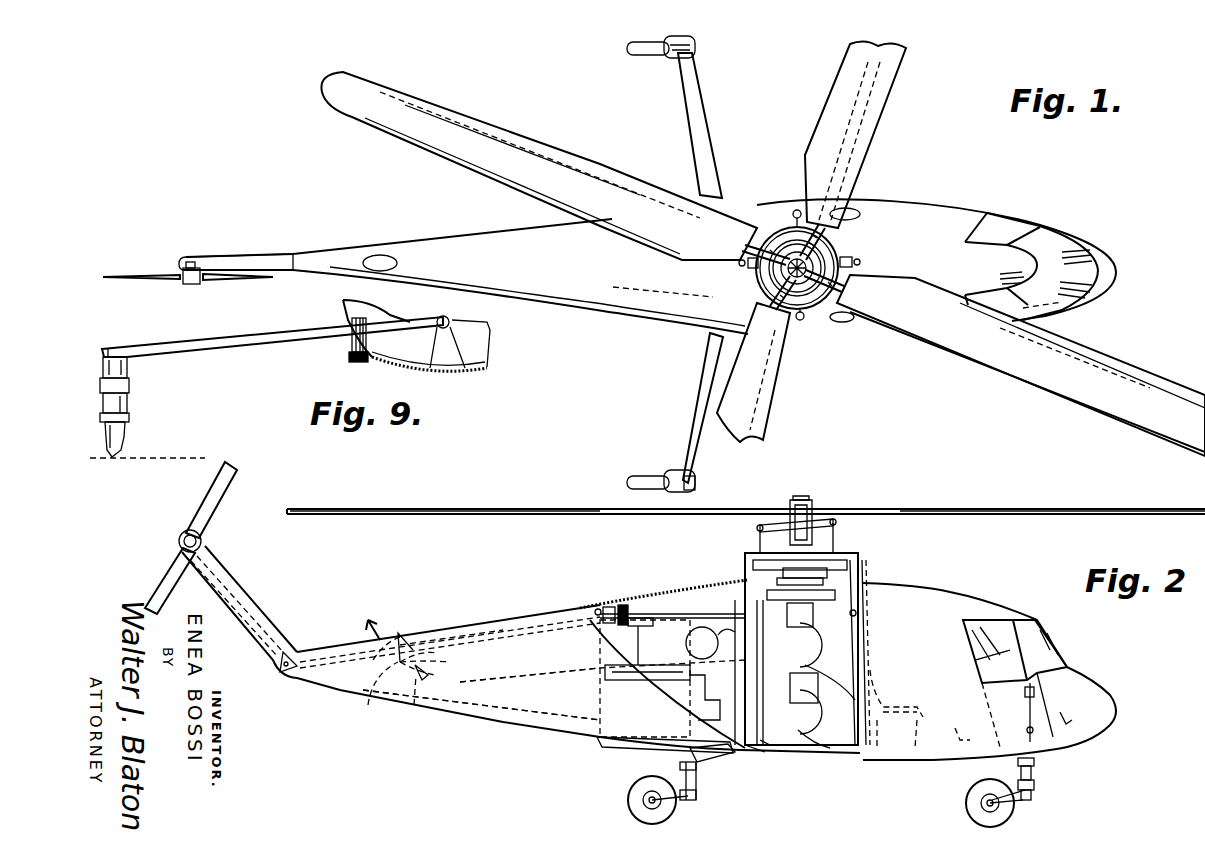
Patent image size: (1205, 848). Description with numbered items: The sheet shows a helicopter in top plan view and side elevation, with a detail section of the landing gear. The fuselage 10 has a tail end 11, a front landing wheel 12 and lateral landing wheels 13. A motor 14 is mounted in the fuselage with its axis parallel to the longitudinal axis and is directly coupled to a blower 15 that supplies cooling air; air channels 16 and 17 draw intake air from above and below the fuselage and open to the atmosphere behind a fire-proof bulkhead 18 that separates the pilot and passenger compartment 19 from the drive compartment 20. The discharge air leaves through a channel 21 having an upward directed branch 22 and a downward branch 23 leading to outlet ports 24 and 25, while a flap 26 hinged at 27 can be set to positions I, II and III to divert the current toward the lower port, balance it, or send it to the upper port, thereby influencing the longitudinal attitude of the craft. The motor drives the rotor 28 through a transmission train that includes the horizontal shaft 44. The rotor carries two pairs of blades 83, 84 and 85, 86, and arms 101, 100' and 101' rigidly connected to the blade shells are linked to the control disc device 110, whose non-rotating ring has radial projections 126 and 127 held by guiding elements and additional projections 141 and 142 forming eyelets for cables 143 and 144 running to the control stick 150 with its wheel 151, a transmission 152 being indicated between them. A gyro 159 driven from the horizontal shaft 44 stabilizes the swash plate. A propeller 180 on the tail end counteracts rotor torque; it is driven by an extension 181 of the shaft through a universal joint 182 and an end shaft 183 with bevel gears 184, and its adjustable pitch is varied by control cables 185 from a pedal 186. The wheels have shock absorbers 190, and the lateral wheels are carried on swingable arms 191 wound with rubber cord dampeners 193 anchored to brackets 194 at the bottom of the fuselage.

In FIG. 1, the fuselage 10 is at (583, 298).
In FIG. 9, the fuselage 10 is at (462, 366).
In FIG. 2, the fuselage 10 is at (940, 597).
In FIG. 1, the tail end 11 is at (277, 254).
In FIG. 2, the tail end 11 is at (252, 602).
In FIG. 2, the front landing wheel 12 is at (967, 796).
In FIG. 1, the lateral landing wheels 13 is at (637, 475).
In FIG. 9, the lateral landing wheels 13 is at (111, 458).
In FIG. 2, the lateral landing wheels 13 is at (637, 783).
In FIG. 2, the motor 14 is at (774, 649).
In FIG. 2, the blower 15 is at (758, 752).
In FIG. 1, the air channel 16 is at (850, 323).
In FIG. 2, the air channel 16 is at (858, 600).
In FIG. 2, the air channel 17 is at (804, 752).
In FIG. 2, the fire-proof bulkhead 18 is at (858, 613).
In FIG. 1, the pilot and passenger compartment 19 is at (1053, 258).
In FIG. 2, the pilot and passenger compartment 19 is at (1042, 630).
In FIG. 2, the drive compartment 20 is at (830, 692).
In FIG. 2, the channel 21 is at (550, 674).
In FIG. 2, the upward directed branch 22 is at (413, 650).
In FIG. 2, the downward branch 23 is at (414, 705).
In FIG. 1, the outlet port 24 is at (378, 255).
In FIG. 2, the outlet port 24 is at (398, 633).
In FIG. 2, the outlet port 25 is at (365, 710).
In FIG. 2, the flap 26 is at (427, 683).
In FIG. 2, the hinge 27 is at (380, 660).
In FIG. 1, the rotor 28 is at (926, 357).
In FIG. 2, the rotor 28 is at (850, 515).
In FIG. 2, the horizontal shaft 44 is at (663, 612).
In FIG. 1, the blade 83 is at (780, 390).
In FIG. 2, the blade 83 is at (826, 522).
In FIG. 1, the blade 84 is at (877, 100).
In FIG. 1, the blade 85 is at (1083, 355).
In FIG. 2, the blade 85 is at (958, 509).
In FIG. 1, the blade 86 is at (592, 160).
In FIG. 2, the blade 86 is at (434, 509).
In FIG. 1, the arm 100' is at (778, 268).
In FIG. 1, the arm 101 is at (810, 267).
In FIG. 1, the arm 101' is at (824, 260).
In FIG. 2, the control disc device 110 is at (770, 548).
In FIG. 1, the radial projection 126 is at (860, 262).
In FIG. 2, the radial projection 126 is at (858, 557).
In FIG. 1, the radial projection 127 is at (745, 263).
In FIG. 1, the projection 141 is at (797, 210).
In FIG. 1, the projection / control-actuating means 142 is at (805, 320).
In FIG. 2, the projection / control-actuating means 142 is at (1042, 745).
In FIG. 2, the cable 143 is at (725, 648).
In FIG. 2, the cable 144 is at (868, 674).
In FIG. 2, the control stick 150 is at (1037, 705).
In FIG. 2, the wheel 151 is at (1036, 688).
In FIG. 2, the transmission 152 is at (955, 728).
In FIG. 2, the gyro 159 is at (655, 675).
In FIG. 1, the propeller 180 is at (146, 279).
In FIG. 2, the propeller 180 is at (235, 479).
In FIG. 2, the extension 181 is at (474, 637).
In FIG. 2, the universal joint 182 is at (608, 605).
In FIG. 2, the end shaft 183 is at (282, 631).
In FIG. 2, the bevel gears 184 is at (286, 676).
In FIG. 2, the control cables 185 is at (488, 703).
In FIG. 2, the pedal 186 is at (1073, 718).
In FIG. 1, the shock absorbers 190 is at (696, 485).
In FIG. 9, the shock absorbers 190 is at (131, 396).
In FIG. 2, the shock absorbers 190 is at (697, 788).
In FIG. 1, the arms 191 is at (697, 352).
In FIG. 9, the arms 191 is at (229, 341).
In FIG. 2, the arms 191 is at (700, 760).
In FIG. 9, the rubber cord dampeners 193 is at (345, 345).
In FIG. 9, the brackets 194 is at (366, 362).
In FIG. 2, the flap position I is at (423, 652).
In FIG. 2, the flap position II is at (432, 660).
In FIG. 2, the flap position III is at (427, 672).